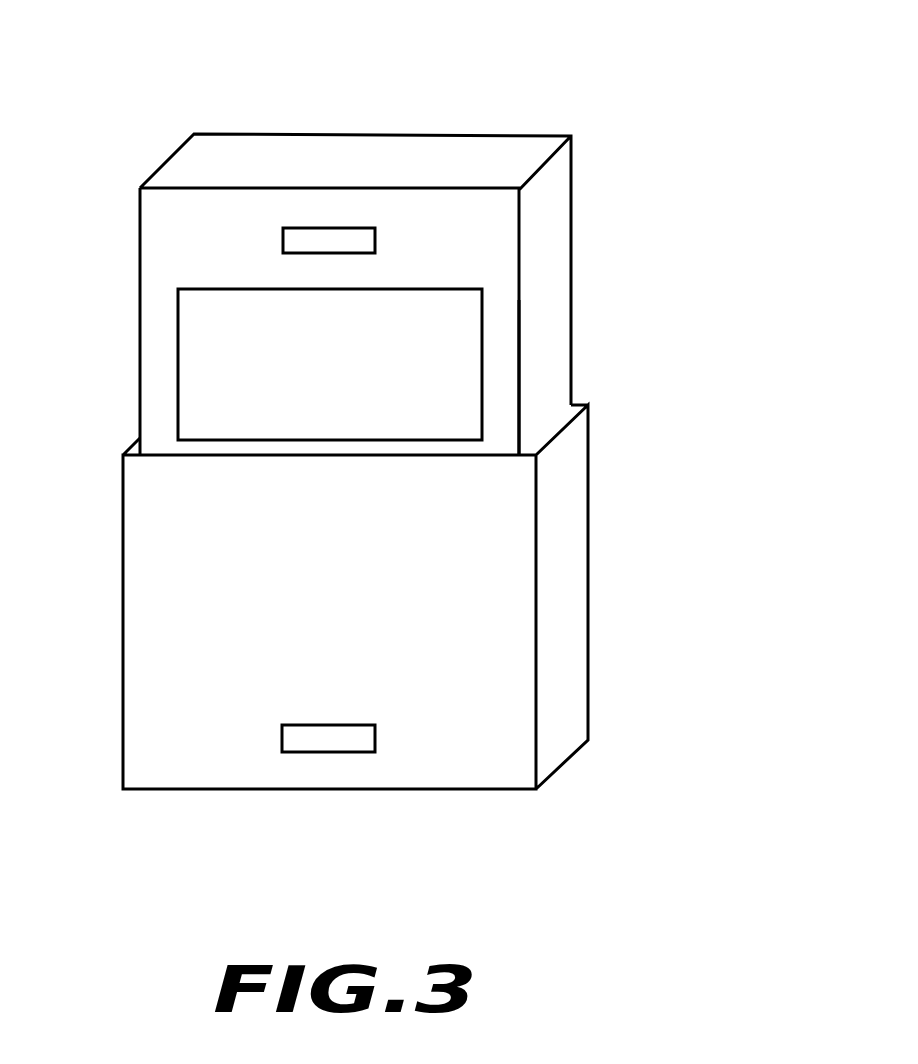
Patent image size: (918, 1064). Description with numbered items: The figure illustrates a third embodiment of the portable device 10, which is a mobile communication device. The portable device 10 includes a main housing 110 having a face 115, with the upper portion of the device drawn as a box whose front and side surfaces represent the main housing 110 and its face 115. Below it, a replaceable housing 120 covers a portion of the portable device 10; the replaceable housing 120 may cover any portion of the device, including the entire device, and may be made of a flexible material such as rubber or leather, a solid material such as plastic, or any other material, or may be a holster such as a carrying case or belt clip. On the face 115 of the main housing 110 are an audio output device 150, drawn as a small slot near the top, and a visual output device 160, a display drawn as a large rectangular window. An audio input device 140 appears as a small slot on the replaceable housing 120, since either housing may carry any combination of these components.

The portable device 10 is at (703, 115).
The main housing 110 is at (552, 242).
The face 115 is at (500, 352).
The replaceable housing 120 is at (567, 630).
The audio input device 140 is at (375, 738).
The audio output device 150 is at (375, 240).
The visual output device 160 is at (178, 365).